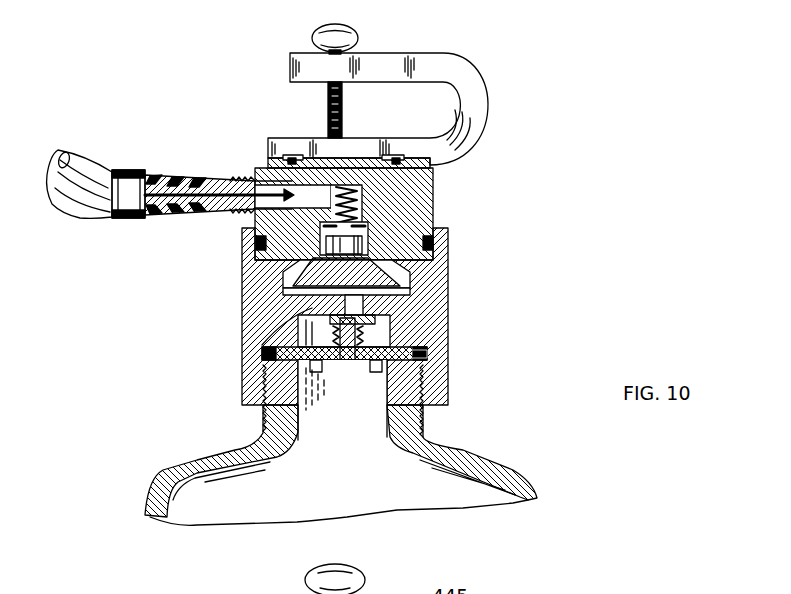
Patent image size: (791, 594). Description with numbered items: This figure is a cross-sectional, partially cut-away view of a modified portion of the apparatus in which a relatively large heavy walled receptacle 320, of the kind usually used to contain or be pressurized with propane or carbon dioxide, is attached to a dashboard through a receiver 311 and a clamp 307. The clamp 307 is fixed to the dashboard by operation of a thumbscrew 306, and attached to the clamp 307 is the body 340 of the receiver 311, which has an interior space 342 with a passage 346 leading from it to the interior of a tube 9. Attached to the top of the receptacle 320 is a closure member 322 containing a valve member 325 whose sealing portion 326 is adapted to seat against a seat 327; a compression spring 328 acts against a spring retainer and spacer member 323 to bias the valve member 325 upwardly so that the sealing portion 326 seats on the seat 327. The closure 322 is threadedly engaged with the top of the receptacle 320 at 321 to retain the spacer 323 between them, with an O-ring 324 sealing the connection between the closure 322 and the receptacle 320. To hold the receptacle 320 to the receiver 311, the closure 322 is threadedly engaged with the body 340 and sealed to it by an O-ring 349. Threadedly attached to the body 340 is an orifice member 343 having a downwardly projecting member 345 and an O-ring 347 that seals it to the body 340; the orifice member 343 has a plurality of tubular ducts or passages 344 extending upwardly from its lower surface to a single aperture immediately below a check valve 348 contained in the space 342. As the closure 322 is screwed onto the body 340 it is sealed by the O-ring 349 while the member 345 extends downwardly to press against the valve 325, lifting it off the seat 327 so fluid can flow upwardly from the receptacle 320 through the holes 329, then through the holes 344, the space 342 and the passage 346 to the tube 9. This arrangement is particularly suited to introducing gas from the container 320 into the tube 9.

The tube 9 is at (88, 166).
The thumbscrew 306 is at (342, 112).
The clamp 307 is at (490, 104).
The receiver 311 is at (488, 191).
The receptacle 320 is at (190, 460).
The threaded engagement 321 is at (262, 412).
The closure member 322 is at (448, 302).
The spring retainer and spacer member 323 is at (408, 368).
The O-ring 324 is at (264, 353).
The valve member 325 is at (342, 372).
The sealing portion 326 is at (390, 318).
The seat 327 is at (305, 310).
The compression spring 328 is at (319, 350).
The holes 329 is at (377, 350).
The body 340 is at (433, 181).
The interior space 342 is at (368, 240).
The orifice member 343 is at (448, 261).
The tubular ducts 344 is at (390, 279).
The downwardly projecting member 345 is at (330, 300).
The passage 346 is at (311, 193).
The O-ring 347 is at (288, 264).
The check valve 348 is at (326, 245).
The O-ring 349 is at (256, 244).